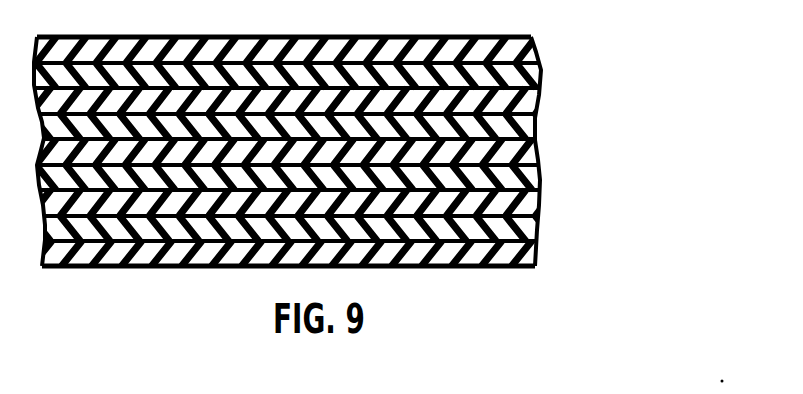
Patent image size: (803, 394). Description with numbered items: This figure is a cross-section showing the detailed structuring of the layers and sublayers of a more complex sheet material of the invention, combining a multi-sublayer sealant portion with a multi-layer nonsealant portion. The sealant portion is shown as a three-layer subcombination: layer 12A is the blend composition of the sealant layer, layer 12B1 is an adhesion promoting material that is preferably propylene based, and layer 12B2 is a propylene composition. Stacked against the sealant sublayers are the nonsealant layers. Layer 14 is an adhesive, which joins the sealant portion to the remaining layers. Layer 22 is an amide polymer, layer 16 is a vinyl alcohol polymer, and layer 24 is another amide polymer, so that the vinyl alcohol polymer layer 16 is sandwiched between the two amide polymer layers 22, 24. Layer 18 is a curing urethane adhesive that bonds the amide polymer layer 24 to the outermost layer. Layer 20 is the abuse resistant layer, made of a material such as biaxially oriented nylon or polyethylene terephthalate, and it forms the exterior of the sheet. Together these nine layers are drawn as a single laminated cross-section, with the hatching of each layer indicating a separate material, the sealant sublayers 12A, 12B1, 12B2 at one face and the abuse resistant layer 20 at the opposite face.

The abuse resistant layer 20 is at (540, 51).
The curing urethane adhesive layer 18 is at (541, 75).
The amide polymer layer 24 is at (541, 102).
The vinyl alcohol polymer layer 16 is at (536, 128).
The amide polymer layer 22 is at (541, 153).
The adhesive layer 14 is at (541, 174).
The adhesion promoting layer 12B1 is at (537, 203).
The blend composition layer 12A is at (530, 223).
The propylene composition layer 12B2 is at (538, 245).